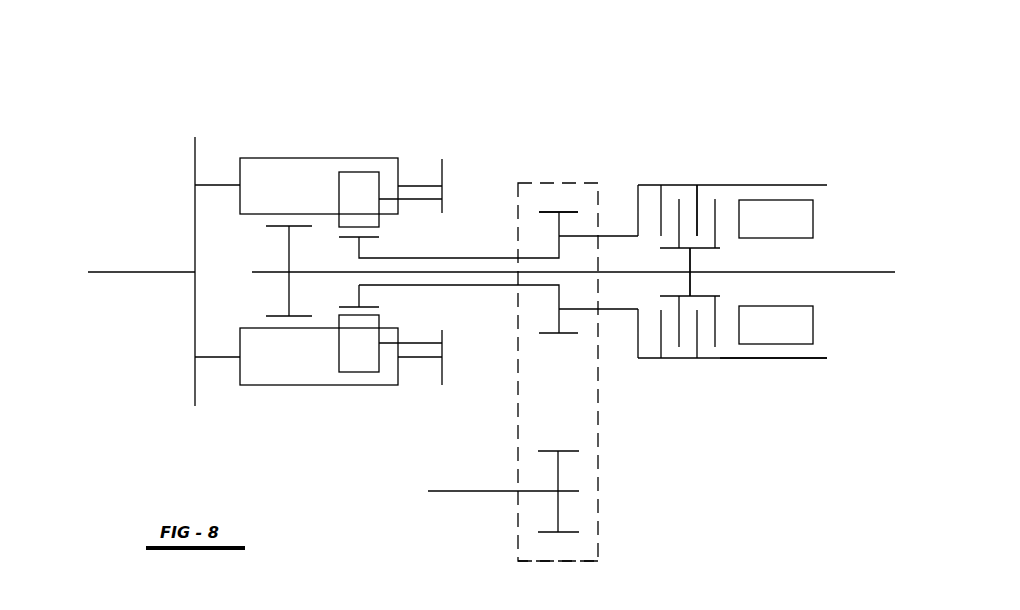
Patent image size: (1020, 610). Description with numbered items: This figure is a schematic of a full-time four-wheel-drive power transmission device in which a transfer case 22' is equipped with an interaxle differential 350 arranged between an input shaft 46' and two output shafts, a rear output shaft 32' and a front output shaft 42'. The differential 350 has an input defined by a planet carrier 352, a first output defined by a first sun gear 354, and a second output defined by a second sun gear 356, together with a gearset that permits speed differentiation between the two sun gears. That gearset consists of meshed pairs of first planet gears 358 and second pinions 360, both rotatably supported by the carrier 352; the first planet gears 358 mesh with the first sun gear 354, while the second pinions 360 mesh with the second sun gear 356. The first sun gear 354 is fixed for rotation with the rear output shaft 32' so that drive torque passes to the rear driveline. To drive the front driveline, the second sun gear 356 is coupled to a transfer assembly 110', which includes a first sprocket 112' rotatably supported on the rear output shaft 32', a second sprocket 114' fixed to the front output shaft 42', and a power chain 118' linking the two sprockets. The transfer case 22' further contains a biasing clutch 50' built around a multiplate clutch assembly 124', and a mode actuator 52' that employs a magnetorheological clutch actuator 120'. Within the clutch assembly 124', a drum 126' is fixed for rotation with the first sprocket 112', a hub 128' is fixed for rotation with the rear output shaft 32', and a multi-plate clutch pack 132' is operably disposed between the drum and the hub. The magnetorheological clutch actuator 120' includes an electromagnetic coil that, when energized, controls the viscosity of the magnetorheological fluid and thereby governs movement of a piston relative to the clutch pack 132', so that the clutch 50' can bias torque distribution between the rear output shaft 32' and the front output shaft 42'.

The transfer case 22' is at (780, 225).
The rear output shaft 32' is at (573, 255).
The front output shaft 42' is at (503, 471).
The input shaft 46' is at (133, 250).
The biasing clutch 50' is at (732, 192).
The mode actuator 52' is at (831, 205).
The transfer assembly 110' is at (625, 372).
The first sprocket 112' is at (559, 168).
The second sprocket 114' is at (612, 491).
The power chain 118' is at (597, 575).
The magnetorheological clutch actuator 120' is at (823, 325).
The multiplate clutch assembly 124' is at (732, 341).
The drum 126' is at (805, 384).
The hub 128' is at (728, 272).
The multi-plate clutch pack 132' is at (754, 191).
The interaxle differential 350 is at (347, 257).
The planet carrier 352 is at (195, 165).
The first sun gear 354 is at (288, 252).
The second sun gear 356 is at (362, 240).
The first planet gears 358 is at (280, 178).
The second pinions 360 is at (356, 355).